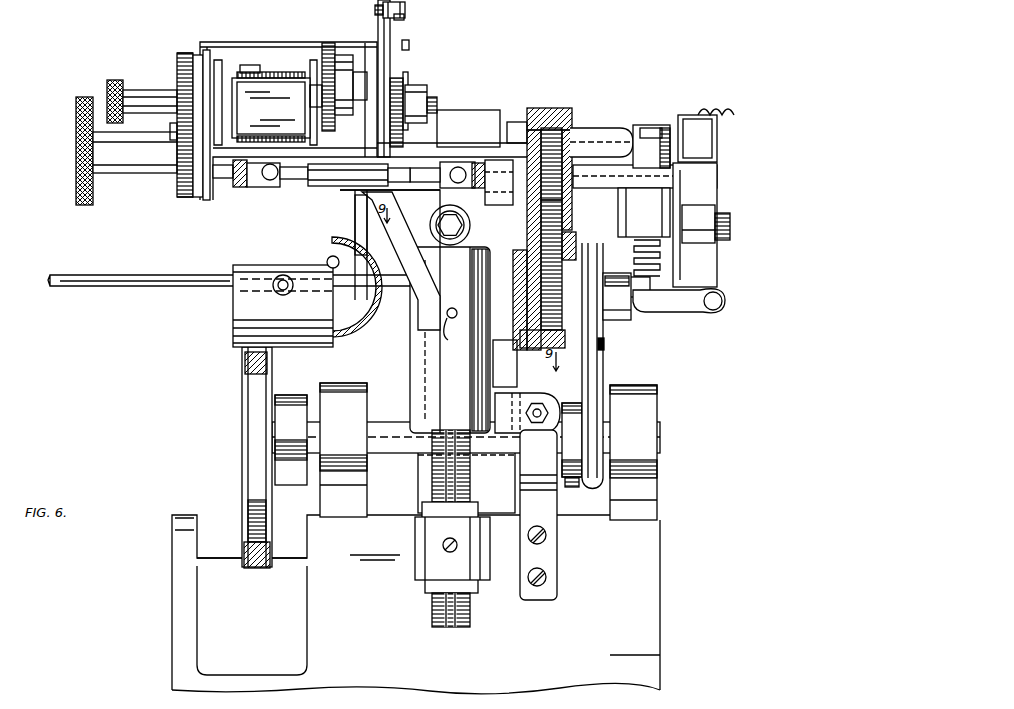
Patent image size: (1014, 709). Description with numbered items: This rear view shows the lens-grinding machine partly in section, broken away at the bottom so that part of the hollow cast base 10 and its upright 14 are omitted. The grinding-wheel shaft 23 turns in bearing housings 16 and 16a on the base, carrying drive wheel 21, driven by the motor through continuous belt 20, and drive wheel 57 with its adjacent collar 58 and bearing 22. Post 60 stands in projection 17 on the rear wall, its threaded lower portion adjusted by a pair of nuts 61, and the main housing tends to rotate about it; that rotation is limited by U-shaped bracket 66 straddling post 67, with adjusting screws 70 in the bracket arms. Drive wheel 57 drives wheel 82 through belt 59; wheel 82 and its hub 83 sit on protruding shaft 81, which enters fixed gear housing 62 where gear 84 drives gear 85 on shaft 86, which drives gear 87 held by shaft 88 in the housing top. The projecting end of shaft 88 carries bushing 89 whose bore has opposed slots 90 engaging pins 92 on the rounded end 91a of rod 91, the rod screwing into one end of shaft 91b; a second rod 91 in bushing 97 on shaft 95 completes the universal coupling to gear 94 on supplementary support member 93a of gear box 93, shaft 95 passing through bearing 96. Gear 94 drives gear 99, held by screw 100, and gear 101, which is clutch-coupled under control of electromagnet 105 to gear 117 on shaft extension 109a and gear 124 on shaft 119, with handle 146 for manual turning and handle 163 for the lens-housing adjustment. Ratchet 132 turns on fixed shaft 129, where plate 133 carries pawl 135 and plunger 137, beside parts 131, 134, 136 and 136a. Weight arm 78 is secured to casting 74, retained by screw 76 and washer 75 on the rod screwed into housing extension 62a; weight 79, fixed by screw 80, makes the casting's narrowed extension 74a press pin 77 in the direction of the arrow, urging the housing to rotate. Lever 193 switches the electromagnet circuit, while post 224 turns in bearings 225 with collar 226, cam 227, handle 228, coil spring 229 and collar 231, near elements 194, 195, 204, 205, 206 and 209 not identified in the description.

The base 10 is at (405, 683).
The frame upright 14 is at (212, 530).
The bearing housing 16 is at (645, 421).
The bearing housing 16a is at (355, 376).
The projection 17 is at (415, 533).
The continuous belt 20 is at (245, 366).
The drive wheel 21 is at (242, 430).
The bearing 22 is at (293, 482).
The shaft 23 is at (380, 456).
The drive wheel 57 is at (590, 402).
The collar 58 is at (572, 488).
The continuous belt 59 is at (598, 372).
The post 60 is at (432, 612).
The nuts 61 is at (470, 510).
The gear housing 62 is at (553, 106).
The extension of gear housing 62a is at (455, 205).
The bracket 66 is at (510, 447).
The post 67 is at (557, 558).
The adjusting screws 70 is at (540, 427).
The casting 74 is at (435, 263).
The narrowed extension 74a is at (432, 329).
The washer 75 is at (464, 232).
The screw 76 is at (440, 232).
The pin 77 is at (448, 330).
The weight arm 78 is at (106, 277).
The weight 79 is at (233, 270).
The screw 80 is at (282, 293).
The protruding shaft 81 is at (628, 306).
The wheel 82 is at (604, 344).
The hub 83 is at (608, 275).
The gear 84 is at (545, 326).
The gear 85 is at (560, 238).
The shaft 86 is at (566, 251).
The gear 87 is at (562, 137).
The shaft 88 is at (500, 165).
The bushing 89 is at (475, 170).
The longitudinal slots 90 is at (262, 190).
The rod 91 is at (300, 184).
The rounded end-portion 91a is at (285, 188).
The shaft 91b is at (300, 180).
The pins 92 is at (270, 185).
The gear box 93 is at (225, 35).
The supplementary gear support member 93a is at (200, 196).
The gear 94 is at (185, 172).
The shaft 95 is at (226, 193).
The bearing 96 is at (210, 198).
The bushing 97 is at (240, 190).
The gear 99 is at (183, 142).
The screw 100 is at (175, 152).
The gear 101 is at (183, 56).
The electromagnet 105 is at (271, 108).
The shaft extension 109a is at (318, 48).
The gear 117 is at (351, 95).
The shaft 119 is at (305, 72).
The gear 124 is at (330, 46).
The fixed shaft 129 is at (438, 106).
The hub 131 is at (428, 96).
The ratchet 132 is at (408, 90).
The plate 133 is at (392, 30).
The screw 134 is at (409, 46).
The pawl 135 is at (402, 80).
The bolt 136 is at (406, 8).
The washer 136a is at (376, 13).
The plunger 137 is at (400, 18).
The handle 146 is at (138, 70).
The handle 163 is at (117, 186).
The lever 193 is at (705, 279).
The block 194 is at (713, 210).
The nut 195 is at (718, 224).
The post 204 is at (358, 213).
The pin 205 is at (327, 262).
The disc 206 is at (330, 254).
The switch 209 is at (705, 114).
The post 224 is at (665, 298).
The bearings 225 is at (615, 150).
The collar 226 is at (664, 130).
The cam 227 is at (641, 132).
The turnable handle 228 is at (691, 314).
The coil spring 229 is at (660, 265).
The collar 231 is at (625, 209).